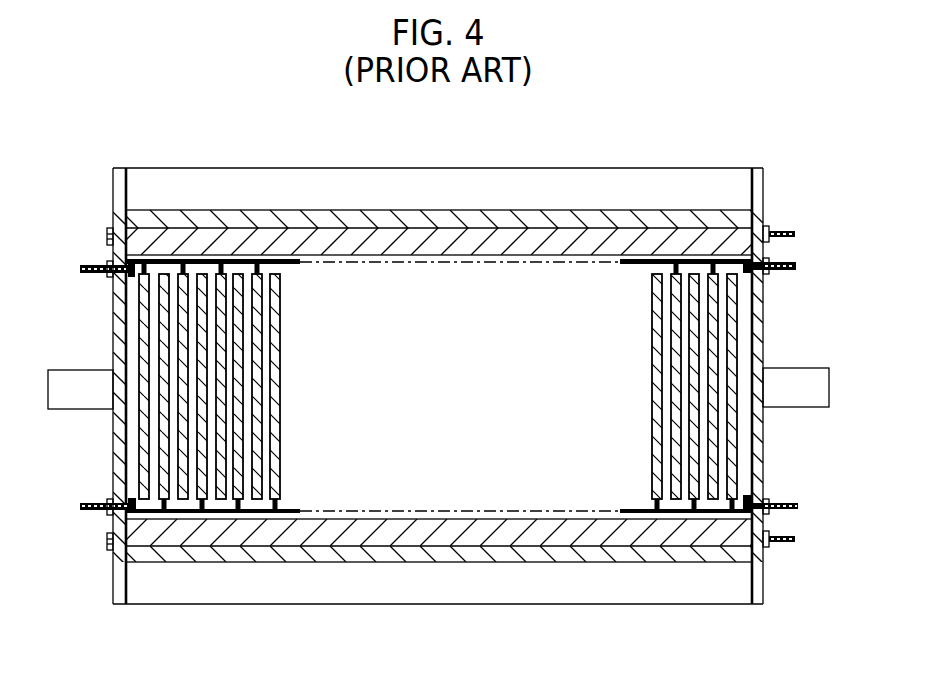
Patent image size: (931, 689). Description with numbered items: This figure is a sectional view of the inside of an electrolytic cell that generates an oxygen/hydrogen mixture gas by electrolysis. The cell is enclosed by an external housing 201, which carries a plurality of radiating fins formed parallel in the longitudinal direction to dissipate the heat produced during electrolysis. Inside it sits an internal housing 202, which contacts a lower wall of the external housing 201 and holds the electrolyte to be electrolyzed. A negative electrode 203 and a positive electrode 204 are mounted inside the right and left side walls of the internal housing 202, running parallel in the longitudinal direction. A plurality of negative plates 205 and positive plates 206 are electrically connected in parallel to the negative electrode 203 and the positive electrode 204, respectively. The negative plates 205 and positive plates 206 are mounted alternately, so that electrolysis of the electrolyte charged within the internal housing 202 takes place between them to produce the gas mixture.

The external housing 201 is at (475, 217).
The internal housing 202 is at (568, 232).
The negative electrode 203 is at (687, 261).
The positive electrode 204 is at (270, 520).
The negative plates 205 is at (717, 369).
The positive plates 206 is at (652, 378).